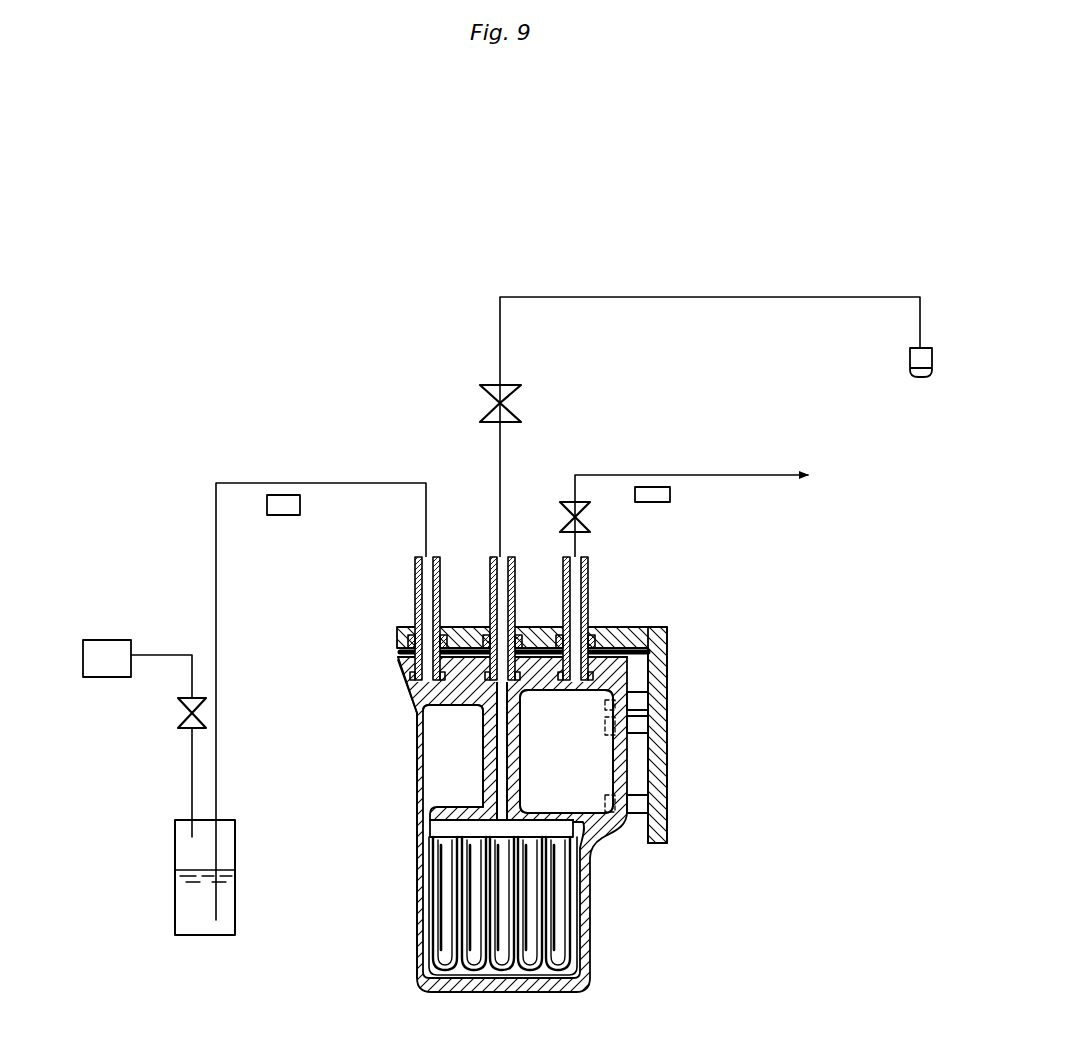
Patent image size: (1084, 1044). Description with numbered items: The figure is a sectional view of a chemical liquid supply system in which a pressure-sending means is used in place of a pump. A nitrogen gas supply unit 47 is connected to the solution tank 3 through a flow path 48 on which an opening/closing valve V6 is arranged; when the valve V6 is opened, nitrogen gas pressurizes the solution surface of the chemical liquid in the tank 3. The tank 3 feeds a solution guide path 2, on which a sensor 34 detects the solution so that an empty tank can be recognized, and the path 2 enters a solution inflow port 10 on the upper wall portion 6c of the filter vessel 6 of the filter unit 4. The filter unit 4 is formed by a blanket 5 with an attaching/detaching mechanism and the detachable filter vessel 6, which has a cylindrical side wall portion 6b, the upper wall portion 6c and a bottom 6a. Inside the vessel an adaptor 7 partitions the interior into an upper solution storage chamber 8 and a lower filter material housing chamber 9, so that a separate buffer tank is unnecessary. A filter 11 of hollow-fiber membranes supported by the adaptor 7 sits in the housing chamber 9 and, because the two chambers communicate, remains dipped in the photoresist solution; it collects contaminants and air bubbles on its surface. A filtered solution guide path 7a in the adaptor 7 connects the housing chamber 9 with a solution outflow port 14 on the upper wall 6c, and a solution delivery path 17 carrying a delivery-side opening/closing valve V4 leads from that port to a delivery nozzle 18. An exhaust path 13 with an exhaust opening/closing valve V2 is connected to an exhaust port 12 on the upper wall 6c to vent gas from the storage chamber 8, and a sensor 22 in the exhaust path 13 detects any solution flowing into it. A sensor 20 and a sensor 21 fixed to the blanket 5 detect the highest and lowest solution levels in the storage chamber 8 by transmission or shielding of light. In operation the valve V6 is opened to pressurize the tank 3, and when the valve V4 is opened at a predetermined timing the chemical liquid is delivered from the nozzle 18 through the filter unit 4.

The solution guide path 2 is at (248, 483).
The solution tank 3 is at (175, 910).
The filter unit 4 is at (529, 795).
The blanket 5 is at (655, 830).
The filter vessel 6 is at (480, 795).
The vessel bottom wall 6a is at (512, 985).
The side wall portion 6b is at (417, 915).
The upper wall portion 6c is at (536, 650).
The adaptor 7 is at (517, 752).
The filtered solution guide path 7a is at (500, 778).
The solution storage chamber 8 is at (430, 752).
The filter material housing chamber 9 is at (577, 898).
The solution inflow port 10 is at (398, 663).
The filter 11 is at (560, 935).
The exhaust port 12 is at (592, 664).
The exhaust path 13 is at (696, 475).
The solution outflow port 14 is at (428, 695).
The solution delivery path 17 is at (730, 297).
The delivery nozzle 18 is at (912, 362).
The sensor 20 is at (637, 702).
The sensor 21 is at (637, 803).
The sensor 22 is at (665, 498).
The sensor 34 is at (282, 518).
The nitrogen gas supply unit 47 is at (115, 650).
The flow path 48 is at (190, 773).
The exhaust opening/closing valve V2 is at (585, 524).
The delivery-side opening/closing valve V4 is at (512, 405).
The opening/closing valve V6 is at (178, 716).